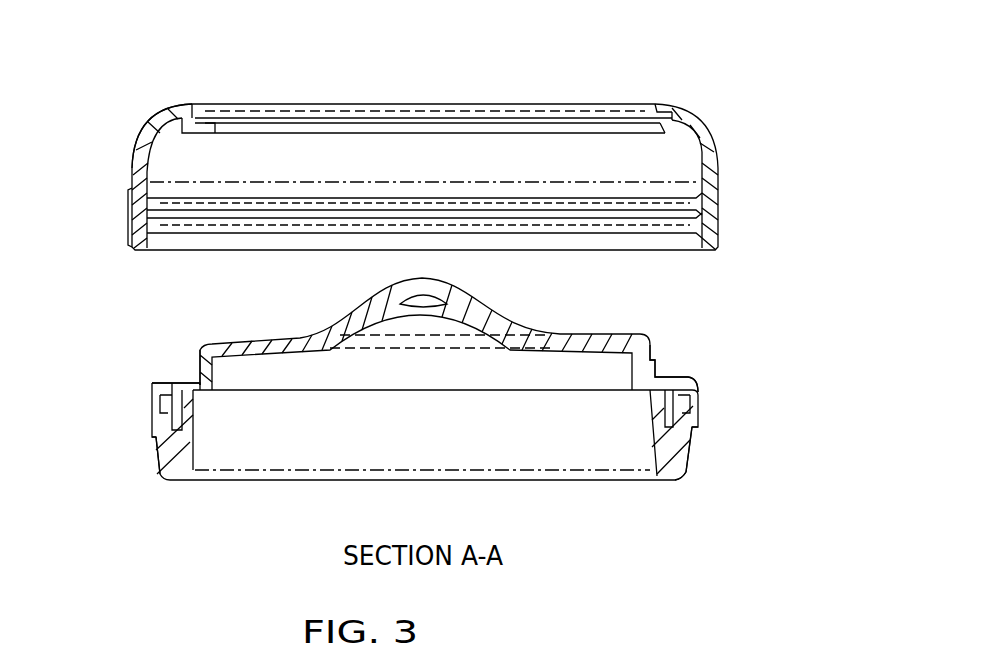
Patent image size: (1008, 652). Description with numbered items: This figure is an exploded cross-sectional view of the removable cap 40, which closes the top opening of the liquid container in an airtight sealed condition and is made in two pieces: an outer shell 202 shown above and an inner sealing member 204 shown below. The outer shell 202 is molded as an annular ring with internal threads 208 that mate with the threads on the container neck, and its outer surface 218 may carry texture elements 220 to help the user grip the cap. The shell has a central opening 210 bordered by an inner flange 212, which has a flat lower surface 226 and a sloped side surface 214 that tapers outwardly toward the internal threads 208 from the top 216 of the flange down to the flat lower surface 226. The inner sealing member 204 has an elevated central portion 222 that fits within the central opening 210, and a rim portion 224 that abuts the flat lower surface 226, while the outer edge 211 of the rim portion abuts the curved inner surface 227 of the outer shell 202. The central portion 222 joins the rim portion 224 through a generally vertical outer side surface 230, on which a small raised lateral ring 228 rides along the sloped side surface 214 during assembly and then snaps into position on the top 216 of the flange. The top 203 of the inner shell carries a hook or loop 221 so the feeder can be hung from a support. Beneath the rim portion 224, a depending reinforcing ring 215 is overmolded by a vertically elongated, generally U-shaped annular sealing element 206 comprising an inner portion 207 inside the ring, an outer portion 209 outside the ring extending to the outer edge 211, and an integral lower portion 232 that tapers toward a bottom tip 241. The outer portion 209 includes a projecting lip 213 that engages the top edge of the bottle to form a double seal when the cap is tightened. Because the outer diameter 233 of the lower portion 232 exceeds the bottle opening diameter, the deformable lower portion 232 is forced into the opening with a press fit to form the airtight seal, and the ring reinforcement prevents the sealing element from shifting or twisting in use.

The removable cap 40 is at (809, 64).
The outer shell 202 is at (712, 162).
The top of the inner shell 203 is at (483, 319).
The inner sealing member 204 is at (730, 374).
The annular sealing element 206 is at (711, 424).
The inner portion 207 is at (195, 407).
The internal threads 208 is at (190, 233).
The outer portion 209 is at (158, 423).
The central opening 210 is at (640, 101).
The outer edge 211 is at (160, 400).
The inner flange 212 is at (218, 131).
The projecting lip 213 is at (155, 432).
The sloped side surface 214 is at (205, 133).
The reinforcing ring 215 is at (165, 418).
The top of the flange 216 is at (205, 103).
The outer surface 218 is at (133, 165).
The texture elements 220 is at (128, 215).
The hook or loop 221 is at (432, 292).
The elevated central portion 222 is at (562, 341).
The rim portion 224 is at (663, 378).
The flat lower surface 226 is at (668, 130).
The curved inner surface 227 is at (160, 135).
The raised lateral ring 228 is at (197, 374).
The outer side surface 230 is at (196, 368).
The lower portion 232 is at (690, 452).
The outer diameter 233 is at (152, 448).
The bottom tip 241 is at (672, 478).